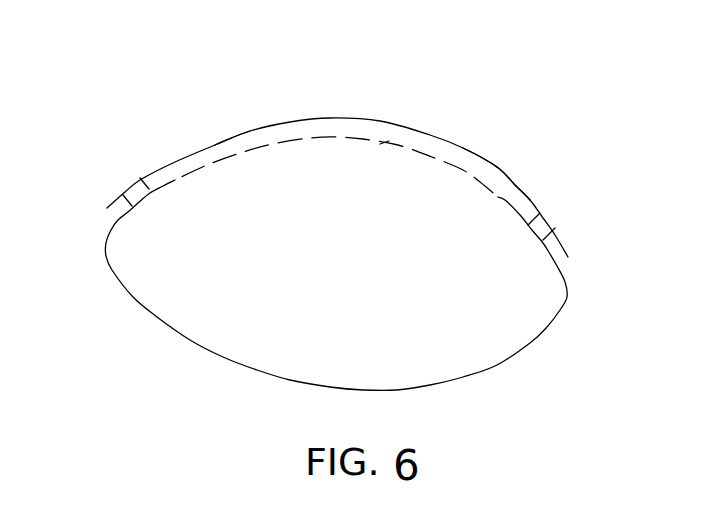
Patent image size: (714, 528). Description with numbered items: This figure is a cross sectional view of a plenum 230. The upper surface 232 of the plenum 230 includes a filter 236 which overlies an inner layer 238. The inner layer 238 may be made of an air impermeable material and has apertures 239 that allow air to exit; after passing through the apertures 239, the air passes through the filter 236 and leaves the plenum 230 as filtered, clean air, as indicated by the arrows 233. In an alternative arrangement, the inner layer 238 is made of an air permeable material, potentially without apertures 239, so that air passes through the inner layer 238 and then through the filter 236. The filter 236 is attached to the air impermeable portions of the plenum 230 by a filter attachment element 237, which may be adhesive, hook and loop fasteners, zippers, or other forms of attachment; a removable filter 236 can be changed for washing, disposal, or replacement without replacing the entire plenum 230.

The plenum 230 is at (498, 396).
The upper surface 232 is at (330, 102).
The arrows 233 is at (242, 180).
The filter 236 is at (520, 190).
The filter attachment element 237 is at (128, 211).
The inner layer 238 is at (307, 140).
The apertures 239 is at (385, 142).